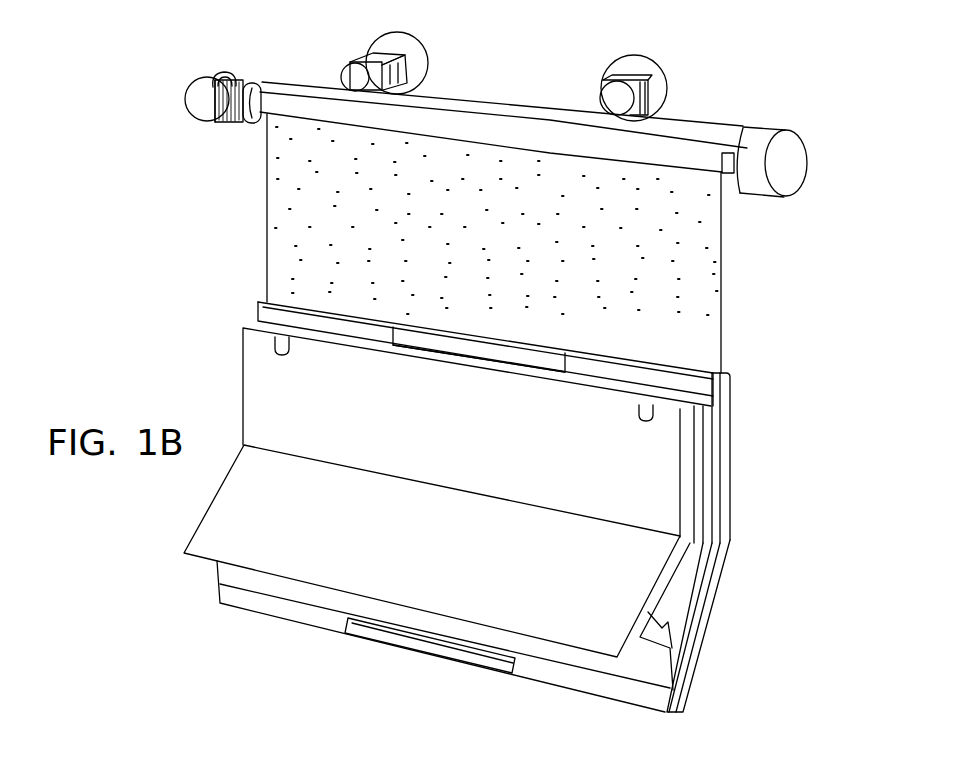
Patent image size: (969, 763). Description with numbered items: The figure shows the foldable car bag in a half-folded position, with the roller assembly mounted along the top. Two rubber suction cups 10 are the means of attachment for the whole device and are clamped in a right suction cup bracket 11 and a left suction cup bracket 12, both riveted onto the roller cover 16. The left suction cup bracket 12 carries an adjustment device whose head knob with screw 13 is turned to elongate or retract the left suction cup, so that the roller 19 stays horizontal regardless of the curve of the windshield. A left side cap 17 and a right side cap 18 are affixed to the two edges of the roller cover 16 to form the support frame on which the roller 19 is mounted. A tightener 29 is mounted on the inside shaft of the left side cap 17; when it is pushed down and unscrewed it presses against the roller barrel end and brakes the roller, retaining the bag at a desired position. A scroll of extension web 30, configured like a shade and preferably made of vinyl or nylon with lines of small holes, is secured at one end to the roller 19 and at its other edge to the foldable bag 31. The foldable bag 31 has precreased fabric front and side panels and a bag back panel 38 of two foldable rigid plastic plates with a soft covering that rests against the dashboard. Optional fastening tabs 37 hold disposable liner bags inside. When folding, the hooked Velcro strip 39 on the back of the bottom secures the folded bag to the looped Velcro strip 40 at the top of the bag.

The suction cup 10 is at (417, 52).
The right suction cup bracket 11 is at (650, 90).
The left suction cup bracket 12 is at (380, 55).
The adjustment head knob with screw 13 is at (350, 78).
The roller cover 16 is at (698, 128).
The left side cap 17 is at (203, 90).
The right side cap 18 is at (797, 152).
The roller 19 is at (295, 113).
The tightener 29 is at (232, 80).
The extension web 30 is at (275, 221).
The foldable bag 31 is at (272, 392).
The fastening tab 37 is at (640, 408).
The bag back panel 38 is at (703, 625).
The hooked Velcro strip 39 is at (393, 638).
The looped Velcro strip 40 is at (450, 348).